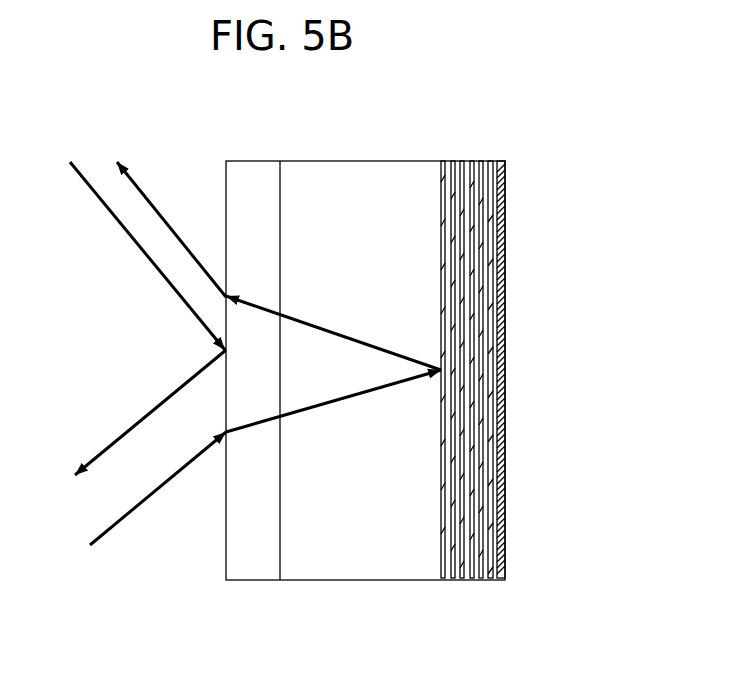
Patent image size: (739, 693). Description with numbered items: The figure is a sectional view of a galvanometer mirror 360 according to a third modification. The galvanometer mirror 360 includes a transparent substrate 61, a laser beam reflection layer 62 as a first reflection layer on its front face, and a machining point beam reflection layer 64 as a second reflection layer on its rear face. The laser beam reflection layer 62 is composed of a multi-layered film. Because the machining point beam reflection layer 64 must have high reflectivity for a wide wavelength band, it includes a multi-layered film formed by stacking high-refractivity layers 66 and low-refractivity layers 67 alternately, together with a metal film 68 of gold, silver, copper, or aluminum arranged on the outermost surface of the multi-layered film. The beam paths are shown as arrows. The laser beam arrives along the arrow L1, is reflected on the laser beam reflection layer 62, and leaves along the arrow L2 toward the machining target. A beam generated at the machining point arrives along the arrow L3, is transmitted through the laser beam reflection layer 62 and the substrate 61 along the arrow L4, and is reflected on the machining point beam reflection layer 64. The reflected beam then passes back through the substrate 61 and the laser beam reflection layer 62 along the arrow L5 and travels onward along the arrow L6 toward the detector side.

The galvanometer mirror 360 is at (414, 370).
The transparent substrate 61 is at (378, 172).
The laser beam reflection layer 62 is at (248, 572).
The machining point beam reflection layer 64 is at (489, 412).
The high-refractivity layer 66 is at (478, 530).
The low-refractivity layer 67 is at (473, 520).
The metal film 68 is at (500, 583).
The arrow L1 is at (98, 197).
The arrow L2 is at (137, 422).
The arrow L3 is at (118, 521).
The arrow L4 is at (345, 400).
The arrow L5 is at (353, 333).
The arrow L6 is at (171, 223).